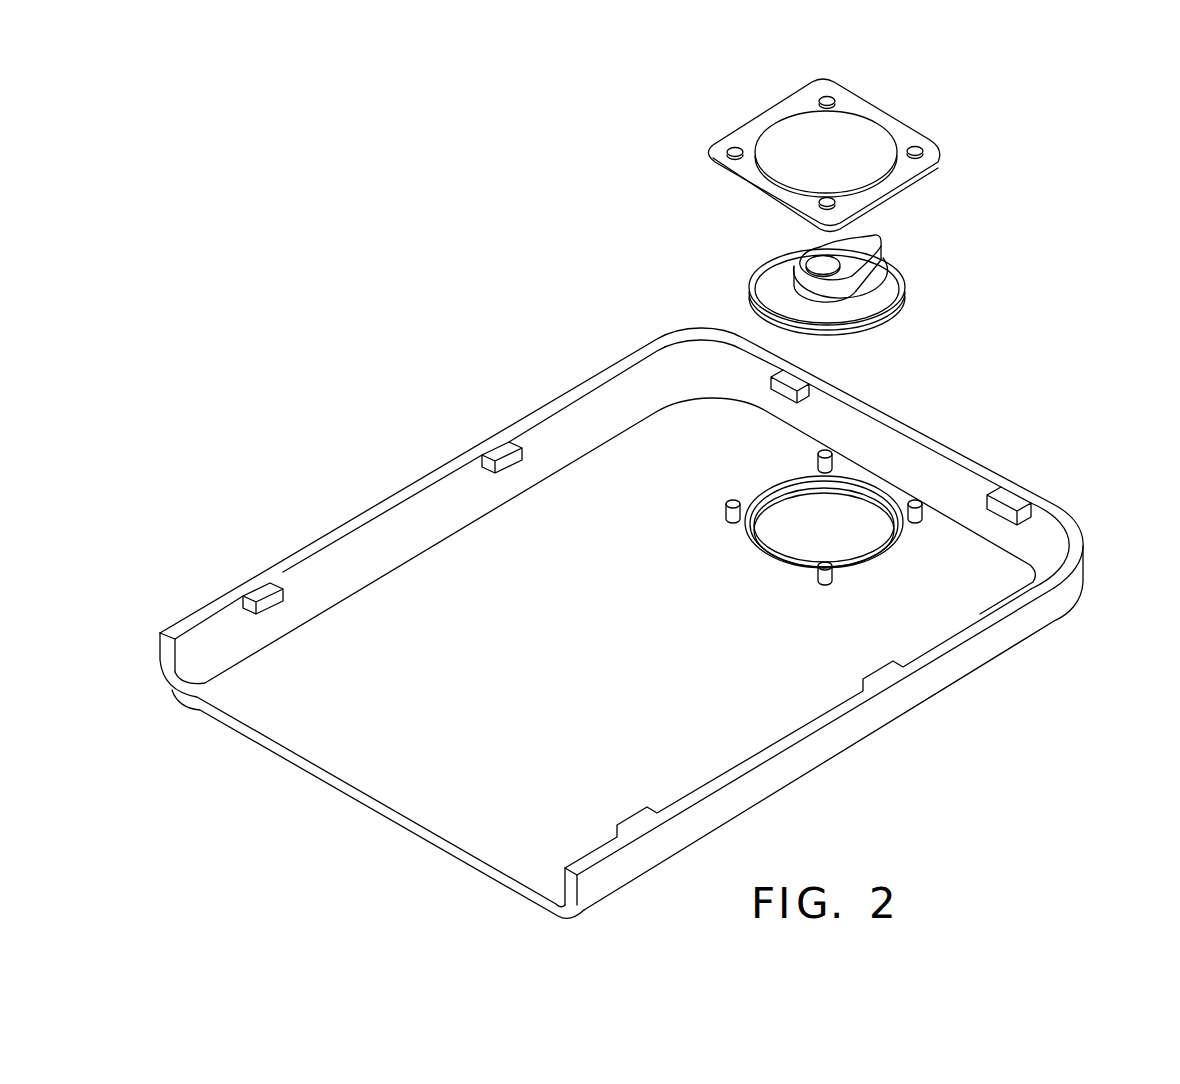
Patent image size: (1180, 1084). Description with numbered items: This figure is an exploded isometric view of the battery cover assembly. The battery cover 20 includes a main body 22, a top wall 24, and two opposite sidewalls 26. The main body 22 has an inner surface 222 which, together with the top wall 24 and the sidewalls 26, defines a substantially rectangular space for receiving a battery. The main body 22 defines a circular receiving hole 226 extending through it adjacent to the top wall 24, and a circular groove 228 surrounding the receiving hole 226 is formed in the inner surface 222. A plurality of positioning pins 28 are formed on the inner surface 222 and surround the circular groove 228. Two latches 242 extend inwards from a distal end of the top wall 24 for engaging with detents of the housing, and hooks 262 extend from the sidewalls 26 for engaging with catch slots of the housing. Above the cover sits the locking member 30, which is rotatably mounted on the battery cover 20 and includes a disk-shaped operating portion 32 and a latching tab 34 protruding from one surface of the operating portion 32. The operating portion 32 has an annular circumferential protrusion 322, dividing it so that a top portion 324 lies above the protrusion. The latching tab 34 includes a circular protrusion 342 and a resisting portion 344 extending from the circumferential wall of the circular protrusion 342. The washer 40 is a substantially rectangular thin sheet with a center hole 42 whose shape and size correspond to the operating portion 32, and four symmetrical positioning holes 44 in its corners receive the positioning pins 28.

The battery cover 20 is at (358, 497).
The main body 22 is at (350, 685).
The inner surface 222 is at (740, 722).
The receiving hole 226 is at (865, 518).
The circular groove 228 is at (840, 487).
The top wall 24 is at (978, 464).
The latches 242 is at (790, 378).
The sidewalls 26 is at (918, 692).
The hooks 262 is at (502, 457).
The positioning pins 28 is at (838, 578).
The locking member 30 is at (978, 213).
The operating portion 32 is at (872, 283).
The annular circumferential protrusion 322 is at (890, 306).
The top portion 324 is at (777, 290).
The latching tab 34 is at (878, 232).
The circular protrusion 342 is at (797, 251).
The resisting portion 344 is at (858, 238).
The washer 40 is at (994, 88).
The center hole 42 is at (866, 150).
The positioning holes 44 is at (918, 152).